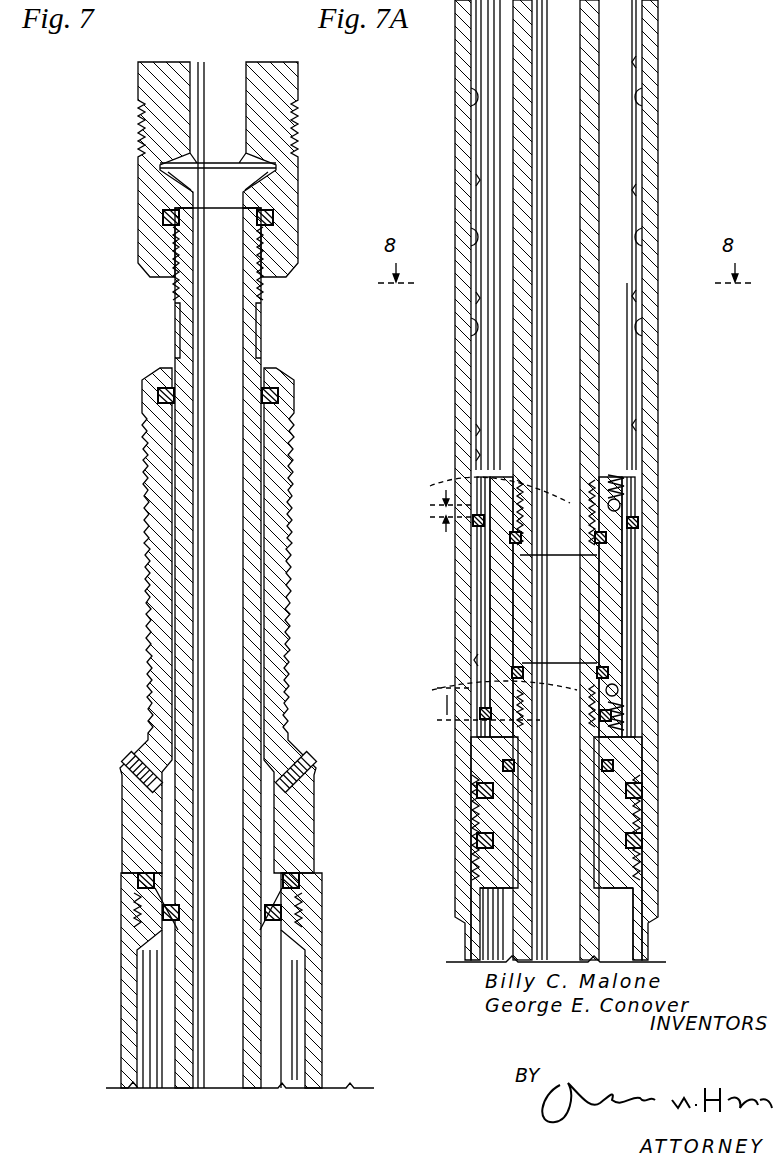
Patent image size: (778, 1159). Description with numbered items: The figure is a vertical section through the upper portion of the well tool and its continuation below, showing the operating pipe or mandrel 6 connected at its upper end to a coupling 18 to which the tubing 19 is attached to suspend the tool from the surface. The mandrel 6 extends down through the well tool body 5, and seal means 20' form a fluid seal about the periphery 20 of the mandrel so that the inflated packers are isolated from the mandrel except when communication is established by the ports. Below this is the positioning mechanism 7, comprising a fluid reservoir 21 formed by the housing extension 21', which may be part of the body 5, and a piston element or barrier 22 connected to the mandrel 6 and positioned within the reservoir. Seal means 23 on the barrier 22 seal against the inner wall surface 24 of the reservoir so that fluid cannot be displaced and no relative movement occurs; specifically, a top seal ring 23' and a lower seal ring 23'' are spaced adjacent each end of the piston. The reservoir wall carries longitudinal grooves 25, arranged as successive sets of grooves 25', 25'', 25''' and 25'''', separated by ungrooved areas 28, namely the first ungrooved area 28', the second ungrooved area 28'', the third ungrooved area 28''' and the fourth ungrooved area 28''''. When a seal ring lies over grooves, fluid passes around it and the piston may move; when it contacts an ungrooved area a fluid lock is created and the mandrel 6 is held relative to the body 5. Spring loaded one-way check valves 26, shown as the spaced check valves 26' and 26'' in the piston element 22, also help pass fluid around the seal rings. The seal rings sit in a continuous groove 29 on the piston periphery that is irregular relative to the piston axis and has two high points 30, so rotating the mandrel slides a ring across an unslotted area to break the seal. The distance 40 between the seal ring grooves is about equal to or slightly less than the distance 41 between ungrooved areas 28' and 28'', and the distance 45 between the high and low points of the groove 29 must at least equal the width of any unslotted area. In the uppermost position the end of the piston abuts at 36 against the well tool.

In FIG. 7, the well tool body 5 is at (315, 1040).
In FIG. 7A, the well tool body 5 is at (650, 88).
In FIG. 7, the operating pipe or mandrel 6 is at (262, 320).
In FIG. 7A, the operating pipe or mandrel 6 is at (590, 40).
In FIG. 7A, the positioning mechanism 7 is at (637, 623).
In FIG. 7, the coupling 18 is at (287, 238).
In FIG. 7, the tubing 19 is at (275, 133).
In FIG. 7, the periphery of the mandrel 20 is at (228, 620).
In FIG. 7, the seal means 20' is at (255, 625).
In FIG. 7A, the seal means 20' is at (596, 800).
In FIG. 7, the fluid reservoir 21 is at (254, 1001).
In FIG. 7A, the fluid reservoir 21 is at (597, 480).
In FIG. 7, the housing extension 21' is at (332, 1010).
In FIG. 7A, the housing extension 21' is at (597, 235).
In FIG. 7A, the piston element or barrier 22 is at (613, 593).
In FIG. 7A, the seal means 23 is at (466, 605).
In FIG. 7A, the top seal ring 23' is at (655, 598).
In FIG. 7A, the lower seal ring 23'' is at (658, 711).
In FIG. 7A, the inner wall surface of the reservoir 24 is at (632, 363).
In FIG. 7A, the grooves 25 is at (562, 238).
In FIG. 7A, the first set of longitudinally extending grooves 25' is at (560, 623).
In FIG. 7A, the second set of longitudinally extending grooves 25'' is at (565, 432).
In FIG. 7A, the third set of grooves 25''' is at (574, 293).
In FIG. 7A, the fourth set of grooves 25'''' is at (569, 185).
In FIG. 7A, the check valves 26 is at (657, 677).
In FIG. 7A, the check valve 26' is at (661, 480).
In FIG. 7A, the check valve 26'' is at (662, 682).
In FIG. 7A, the ungrooved area 28 is at (450, 617).
In FIG. 7A, the first ungrooved area 28' is at (671, 513).
In FIG. 7A, the second ungrooved area 28'' is at (563, 328).
In FIG. 7A, the third ungrooved area 28''' is at (570, 240).
In FIG. 7A, the fourth ungrooved area 28'''' is at (566, 97).
In FIG. 7A, the continuous groove 29 is at (625, 738).
In FIG. 7A, the high points 30 is at (446, 500).
In FIG. 7, the abutment 36 is at (290, 918).
In FIG. 7A, the distance between seal ring grooves 40 is at (488, 600).
In FIG. 7A, the distance between ungrooved areas 41 is at (443, 393).
In FIG. 7A, the distance between high and low points of the groove 45 is at (572, 706).